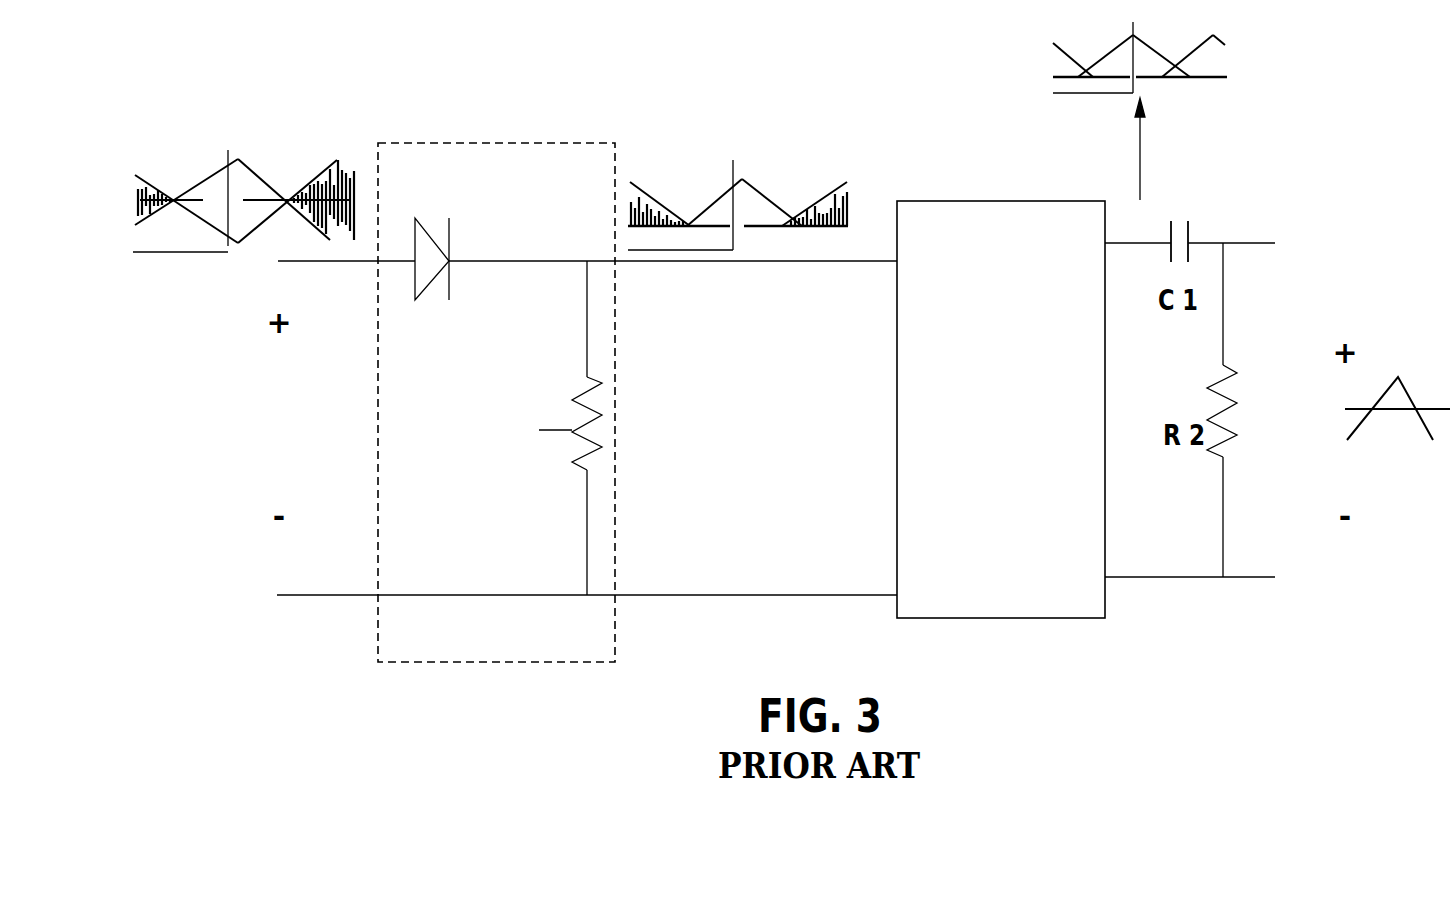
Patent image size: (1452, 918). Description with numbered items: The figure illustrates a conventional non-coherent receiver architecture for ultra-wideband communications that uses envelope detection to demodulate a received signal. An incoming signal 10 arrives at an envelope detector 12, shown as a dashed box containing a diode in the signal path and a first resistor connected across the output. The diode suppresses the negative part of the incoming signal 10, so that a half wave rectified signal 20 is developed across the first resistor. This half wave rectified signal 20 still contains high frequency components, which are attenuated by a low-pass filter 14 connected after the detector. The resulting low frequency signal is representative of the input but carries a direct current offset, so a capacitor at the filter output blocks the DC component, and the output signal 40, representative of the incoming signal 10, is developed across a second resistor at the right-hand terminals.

The incoming signal 10 is at (243, 169).
The envelope detector 12 is at (545, 197).
The low-pass filter 14 is at (994, 251).
The half wave rectified signal 20 is at (738, 173).
The output signal 40 is at (1397, 408).